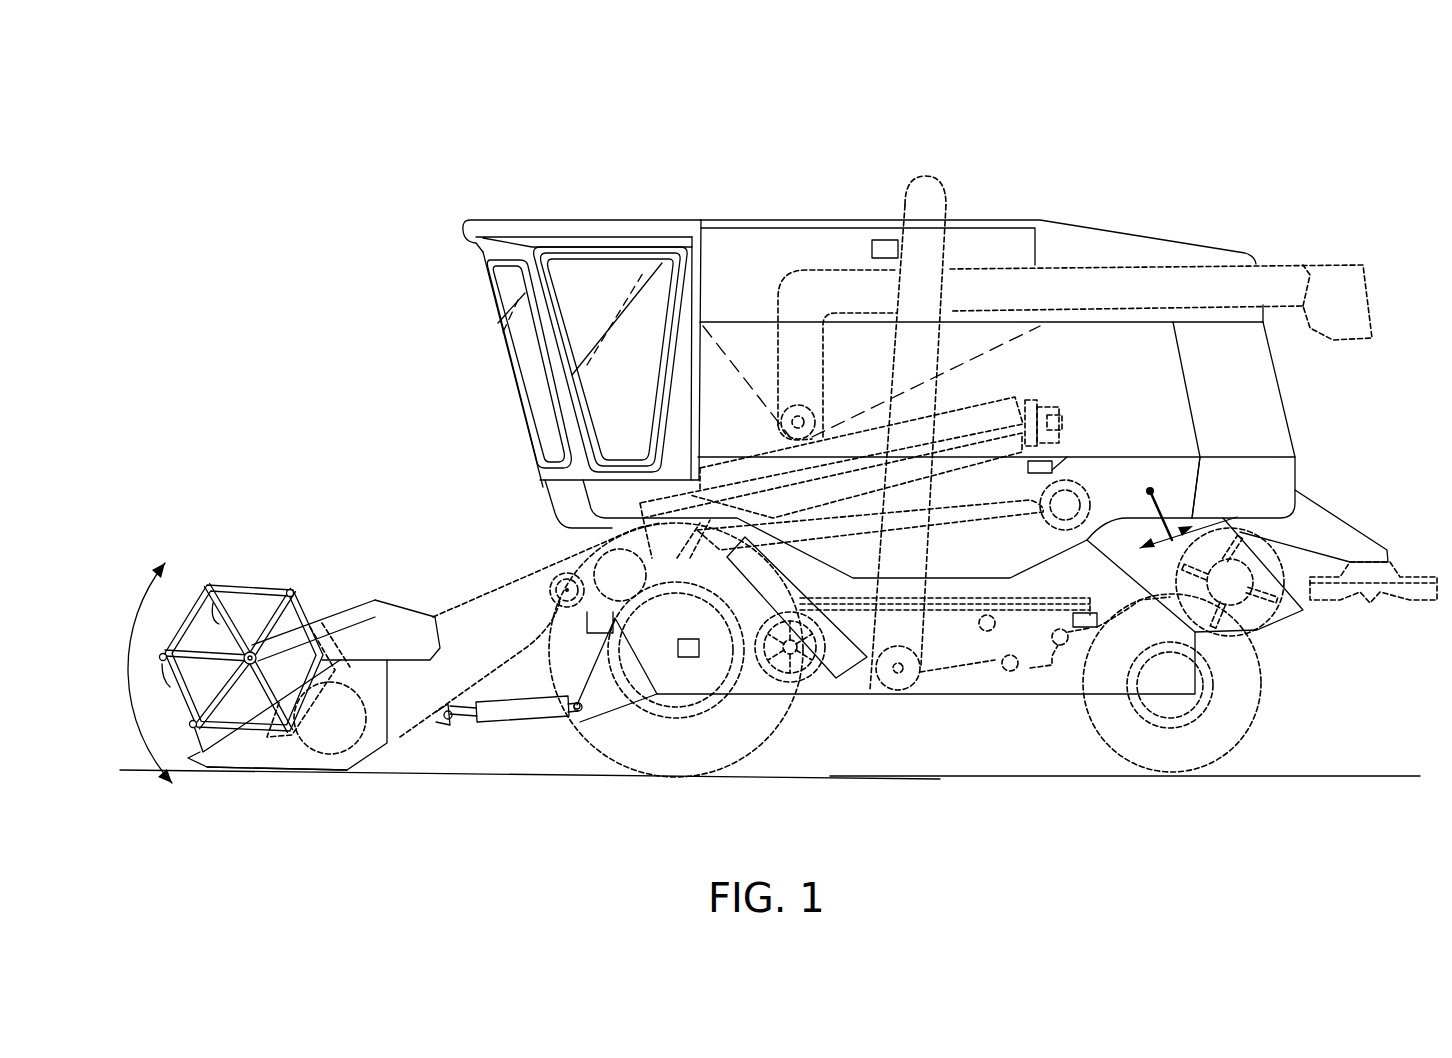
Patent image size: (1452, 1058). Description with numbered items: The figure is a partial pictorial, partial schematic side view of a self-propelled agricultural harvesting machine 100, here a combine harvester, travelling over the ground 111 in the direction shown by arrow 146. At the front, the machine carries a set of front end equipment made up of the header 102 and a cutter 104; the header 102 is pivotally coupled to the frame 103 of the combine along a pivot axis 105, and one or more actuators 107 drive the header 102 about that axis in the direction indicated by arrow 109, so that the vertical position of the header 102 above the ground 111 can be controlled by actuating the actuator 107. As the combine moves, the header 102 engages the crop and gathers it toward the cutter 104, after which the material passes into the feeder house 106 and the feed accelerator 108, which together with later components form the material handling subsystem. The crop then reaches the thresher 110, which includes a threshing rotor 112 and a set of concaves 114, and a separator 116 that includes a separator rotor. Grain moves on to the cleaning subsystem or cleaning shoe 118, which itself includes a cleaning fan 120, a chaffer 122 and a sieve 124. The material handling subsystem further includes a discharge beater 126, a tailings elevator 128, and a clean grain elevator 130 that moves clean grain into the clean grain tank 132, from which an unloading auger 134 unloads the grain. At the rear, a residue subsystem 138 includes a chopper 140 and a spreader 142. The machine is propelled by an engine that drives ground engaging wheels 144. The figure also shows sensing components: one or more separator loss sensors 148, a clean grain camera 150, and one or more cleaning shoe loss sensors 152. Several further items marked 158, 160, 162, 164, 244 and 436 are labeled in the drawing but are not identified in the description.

The self-propelled agricultural harvesting machine 100 is at (1234, 121).
The header 102 is at (270, 583).
The frame 103 is at (613, 710).
The cutter 104 is at (243, 776).
The pivot axis 105 is at (562, 590).
The feeder house 106 is at (473, 597).
The actuator 107 is at (500, 722).
The feed accelerator 108 is at (597, 562).
The arrow 109 is at (127, 673).
The thresher 110 is at (962, 400).
The ground 111 is at (993, 819).
The threshing rotor 112 is at (1028, 386).
The concaves 114 is at (1090, 462).
The separator 116 is at (953, 522).
The cleaning subsystem 118 is at (1088, 643).
The cleaning fan 120 is at (757, 672).
The chaffer 122 is at (1085, 592).
The sieve 124 is at (995, 623).
The discharge beater 126 is at (1155, 503).
The tailings elevator 128 is at (840, 673).
The clean grain elevator 130 is at (922, 628).
The clean grain tank 132 is at (738, 315).
The unloading auger 134 is at (820, 423).
The residue subsystem 138 is at (1352, 512).
The chopper 140 is at (1230, 627).
The spreader 142 is at (1337, 600).
The ground engaging wheels 144 is at (584, 738).
The arrow 146 is at (687, 658).
The separator loss sensors 148 is at (1072, 457).
The clean grain camera 150 is at (877, 238).
The cleaning shoe loss sensors 152 is at (1100, 627).
The operator cab 158 is at (590, 219).
The residue chopper 160 is at (1188, 518).
The residue subsystem 162 is at (1192, 498).
The residue outlet 164 is at (1230, 519).
The rear wheel 244 is at (1150, 773).
The unloading auger spout 436 is at (1338, 263).